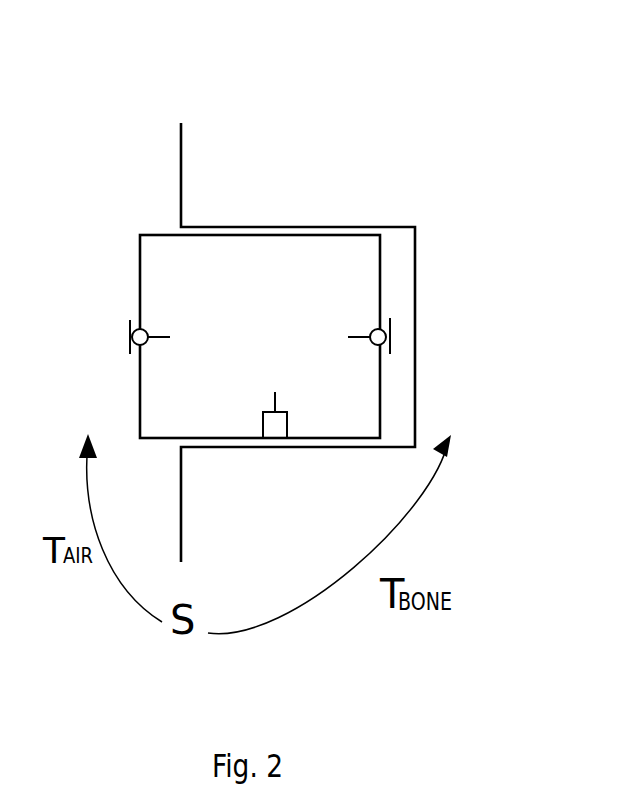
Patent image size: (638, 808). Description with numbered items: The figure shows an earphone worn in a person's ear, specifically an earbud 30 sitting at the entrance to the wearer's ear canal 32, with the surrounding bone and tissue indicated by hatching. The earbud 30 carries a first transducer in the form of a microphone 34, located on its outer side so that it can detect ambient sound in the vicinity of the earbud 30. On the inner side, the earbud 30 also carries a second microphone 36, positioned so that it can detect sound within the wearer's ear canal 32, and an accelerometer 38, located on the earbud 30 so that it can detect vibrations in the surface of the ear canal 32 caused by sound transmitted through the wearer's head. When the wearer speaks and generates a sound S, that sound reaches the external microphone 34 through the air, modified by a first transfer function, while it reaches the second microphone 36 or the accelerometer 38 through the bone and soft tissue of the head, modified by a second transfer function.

The earbud 30 is at (140, 275).
The ear canal 32 is at (255, 226).
The microphone 34 is at (128, 333).
The second microphone 36 is at (392, 336).
The accelerometer 38 is at (262, 425).